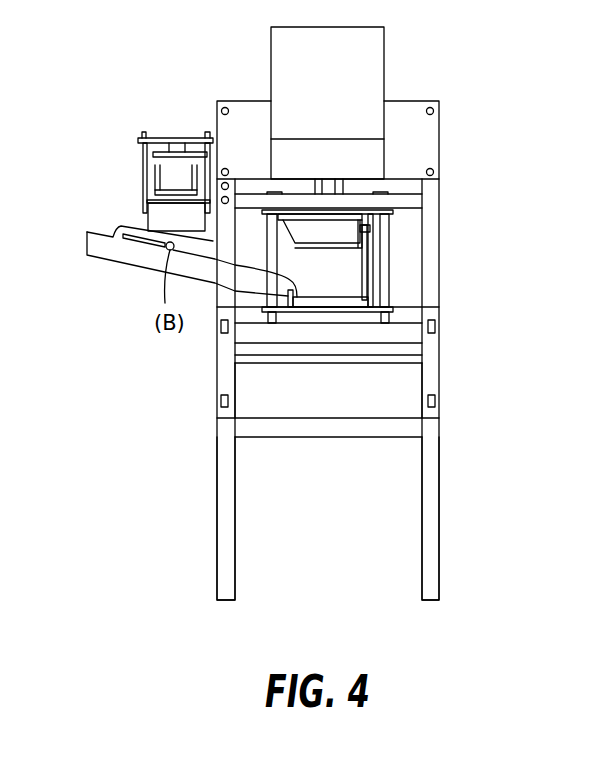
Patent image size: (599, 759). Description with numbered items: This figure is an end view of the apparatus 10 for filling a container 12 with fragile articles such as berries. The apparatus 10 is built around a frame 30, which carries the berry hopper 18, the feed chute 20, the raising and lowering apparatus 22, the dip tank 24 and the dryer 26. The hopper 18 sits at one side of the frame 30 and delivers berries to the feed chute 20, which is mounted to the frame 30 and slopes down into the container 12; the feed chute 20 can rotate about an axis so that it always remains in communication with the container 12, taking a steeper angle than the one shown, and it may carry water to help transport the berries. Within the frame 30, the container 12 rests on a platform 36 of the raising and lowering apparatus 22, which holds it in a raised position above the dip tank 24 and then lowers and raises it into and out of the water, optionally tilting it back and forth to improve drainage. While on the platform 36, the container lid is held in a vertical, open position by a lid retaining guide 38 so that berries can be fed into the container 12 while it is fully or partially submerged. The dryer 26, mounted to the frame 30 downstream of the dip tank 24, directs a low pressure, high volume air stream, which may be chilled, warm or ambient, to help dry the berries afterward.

The apparatus 10 is at (106, 76).
The container 12 is at (335, 297).
The berry hopper 18 is at (152, 220).
The feed chute 20 is at (127, 263).
The raising and lowering apparatus 22 is at (390, 253).
The dip tank 24 is at (422, 380).
The dryer 26 is at (384, 57).
The frame 30 is at (430, 497).
The platform 36 is at (372, 306).
The lid retaining guide 38 is at (372, 231).